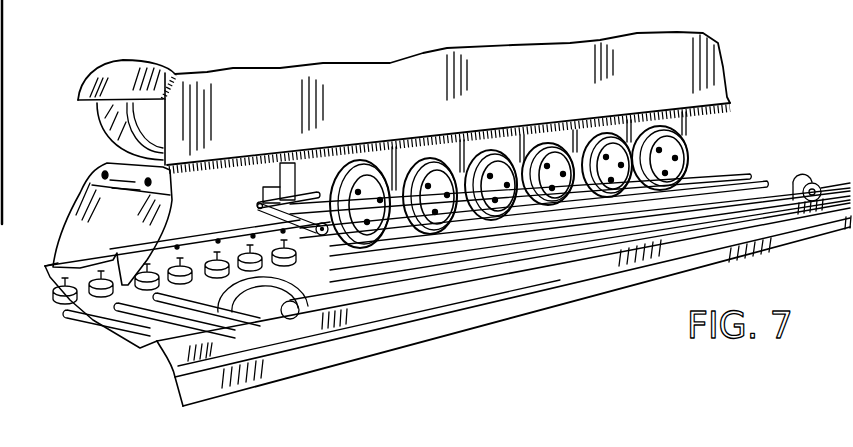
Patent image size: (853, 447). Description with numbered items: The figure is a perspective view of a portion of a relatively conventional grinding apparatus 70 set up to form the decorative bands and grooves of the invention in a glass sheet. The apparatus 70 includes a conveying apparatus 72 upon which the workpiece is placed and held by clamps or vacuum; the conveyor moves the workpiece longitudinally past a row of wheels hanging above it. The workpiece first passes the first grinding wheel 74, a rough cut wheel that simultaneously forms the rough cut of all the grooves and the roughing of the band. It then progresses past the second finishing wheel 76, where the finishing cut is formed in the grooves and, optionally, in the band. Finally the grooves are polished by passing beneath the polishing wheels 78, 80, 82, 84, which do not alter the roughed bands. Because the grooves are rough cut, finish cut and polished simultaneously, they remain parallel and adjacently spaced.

The grinding apparatus 70 is at (368, 53).
The conveying apparatus 72 is at (342, 298).
The first grinding wheel 74 is at (365, 185).
The second finishing wheel 76 is at (435, 172).
The polishing wheel 78 is at (495, 160).
The polishing wheel 80 is at (553, 150).
The polishing wheel 82 is at (606, 140).
The polishing wheel 84 is at (656, 135).